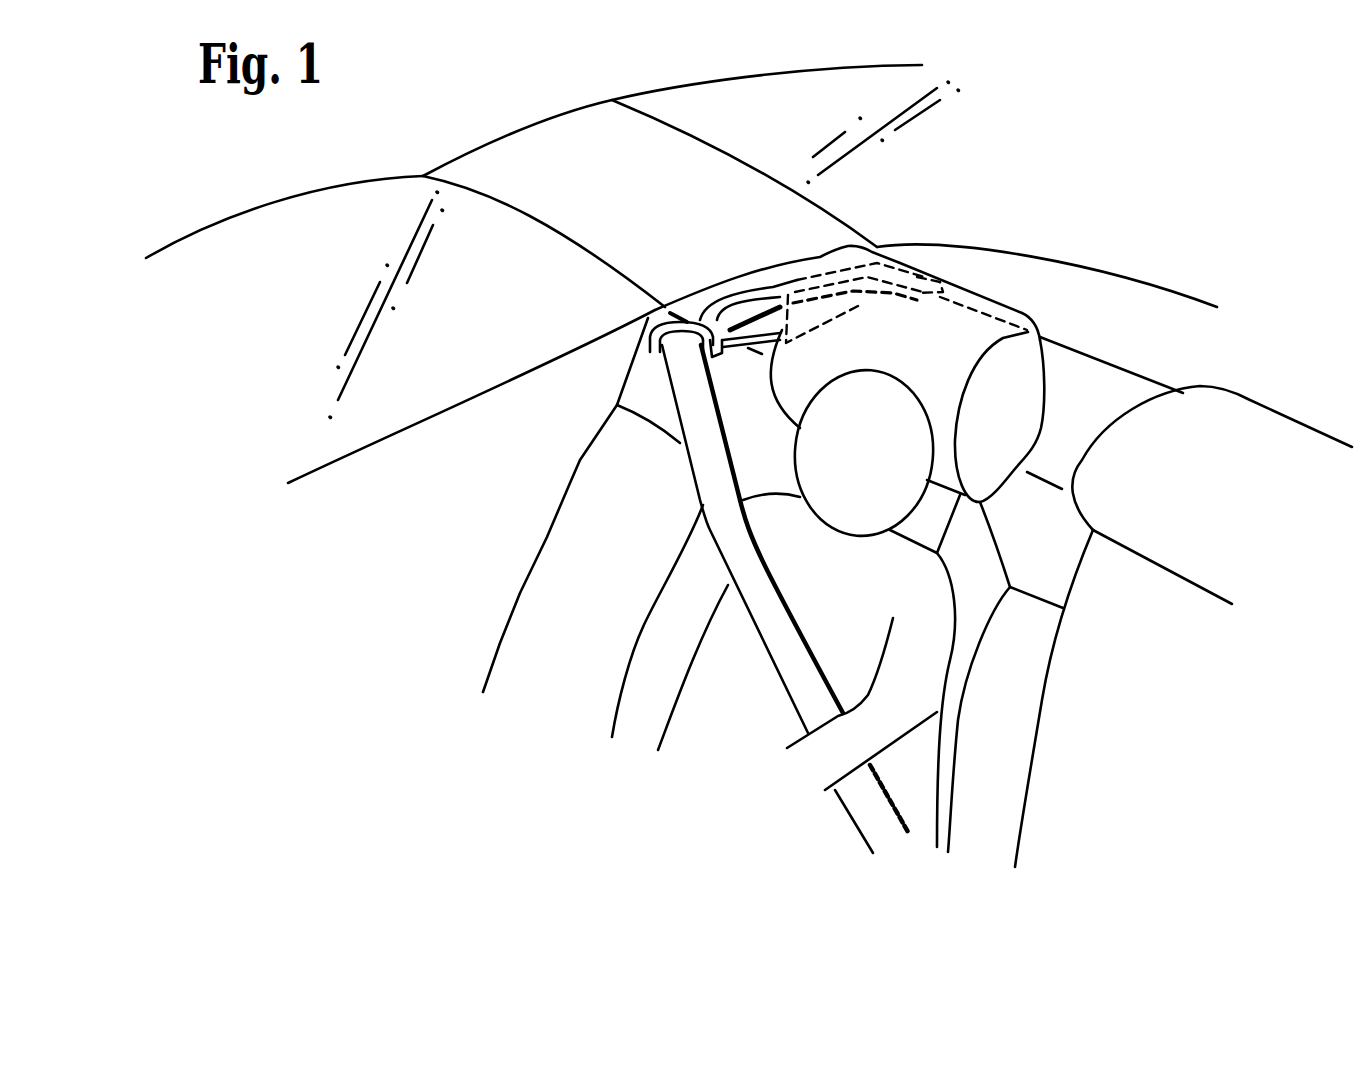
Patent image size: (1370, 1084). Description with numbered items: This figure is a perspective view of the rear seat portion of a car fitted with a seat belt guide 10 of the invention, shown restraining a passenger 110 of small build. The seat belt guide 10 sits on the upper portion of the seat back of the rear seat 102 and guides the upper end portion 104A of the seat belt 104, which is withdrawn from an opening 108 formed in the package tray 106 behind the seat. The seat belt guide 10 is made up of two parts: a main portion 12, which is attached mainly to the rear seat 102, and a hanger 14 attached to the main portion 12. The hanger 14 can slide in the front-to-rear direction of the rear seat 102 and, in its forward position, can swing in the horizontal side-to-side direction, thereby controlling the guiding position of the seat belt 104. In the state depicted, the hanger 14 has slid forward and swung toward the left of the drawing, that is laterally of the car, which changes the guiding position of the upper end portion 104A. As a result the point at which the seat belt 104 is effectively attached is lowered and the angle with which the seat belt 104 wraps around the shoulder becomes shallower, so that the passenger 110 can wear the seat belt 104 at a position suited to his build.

The seat belt guide 10 is at (704, 279).
The main portion 12 is at (760, 290).
The hanger 14 is at (667, 308).
The rear seat 102 is at (572, 483).
The seat belt 104 is at (709, 599).
The upper end portion 104A is at (680, 370).
The package tray 106 is at (1127, 305).
The opening 108 is at (923, 275).
The passenger 110 is at (690, 717).